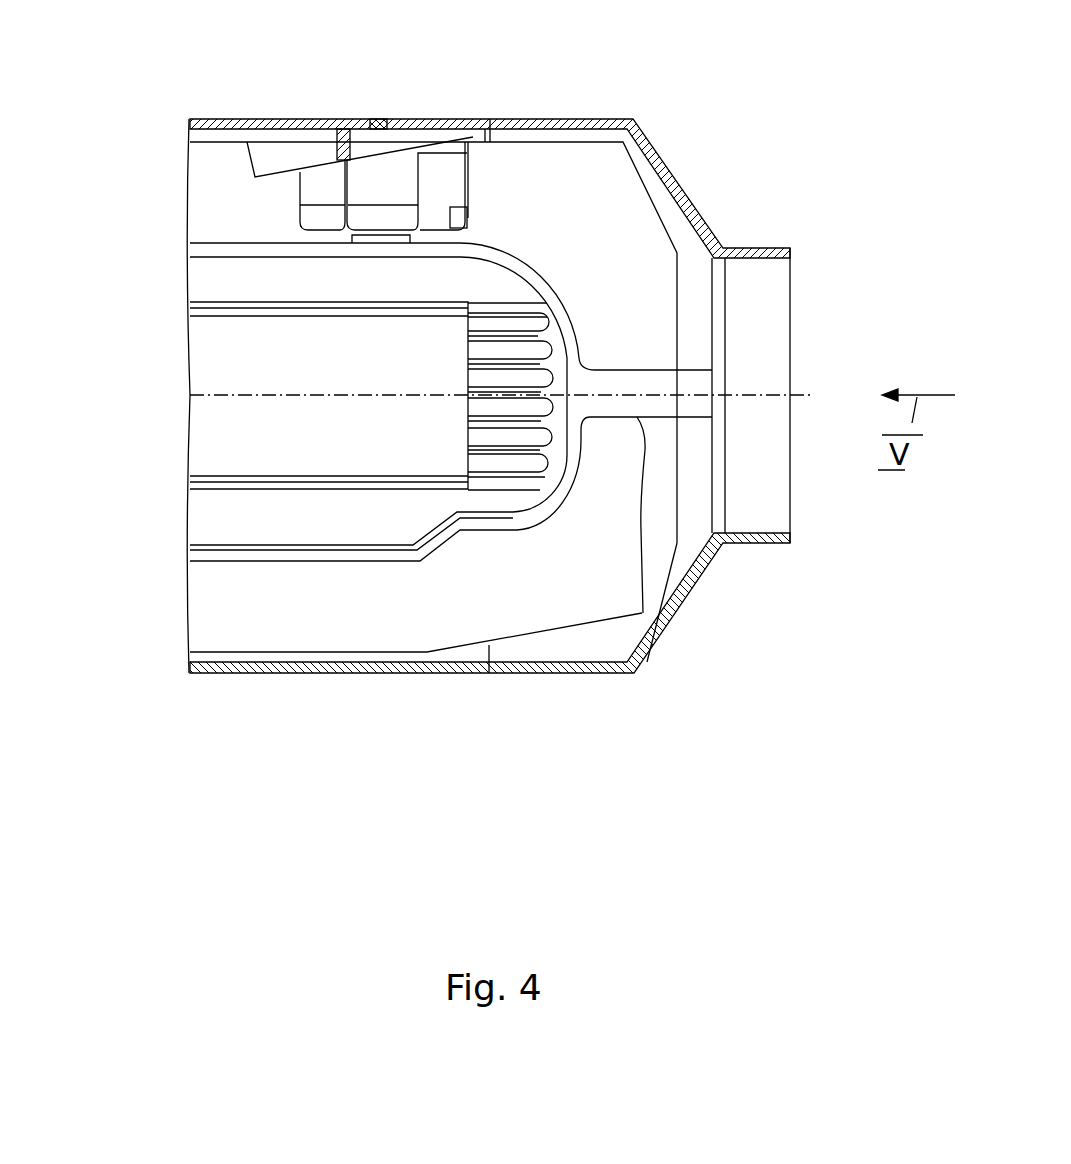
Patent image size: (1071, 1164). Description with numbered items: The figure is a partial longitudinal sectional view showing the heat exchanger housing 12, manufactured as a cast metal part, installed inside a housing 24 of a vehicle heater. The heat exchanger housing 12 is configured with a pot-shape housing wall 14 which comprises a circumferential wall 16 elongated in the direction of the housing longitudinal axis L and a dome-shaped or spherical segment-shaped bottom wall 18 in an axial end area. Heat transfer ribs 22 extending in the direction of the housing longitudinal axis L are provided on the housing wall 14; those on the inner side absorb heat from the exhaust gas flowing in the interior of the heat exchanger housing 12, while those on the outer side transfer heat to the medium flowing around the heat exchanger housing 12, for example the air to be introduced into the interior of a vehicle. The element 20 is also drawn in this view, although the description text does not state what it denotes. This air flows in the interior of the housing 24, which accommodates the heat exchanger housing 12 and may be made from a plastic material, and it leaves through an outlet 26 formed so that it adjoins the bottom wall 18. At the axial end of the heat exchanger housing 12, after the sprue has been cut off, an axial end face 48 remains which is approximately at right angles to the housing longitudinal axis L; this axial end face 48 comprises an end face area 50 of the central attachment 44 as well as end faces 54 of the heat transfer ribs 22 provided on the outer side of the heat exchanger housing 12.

The heat exchanger housing 12 is at (145, 242).
The housing wall 14 is at (234, 570).
The circumferential wall 16 is at (212, 245).
The bottom wall 18 is at (549, 312).
The filter element 20 is at (220, 277).
The heat transfer ribs 22 is at (617, 185).
The housing 24 is at (593, 675).
The outlet 26 is at (756, 256).
The central attachment 44 is at (643, 543).
The axial end face 48 is at (677, 337).
The end face area 50 is at (677, 385).
The end faces 54 is at (677, 502).
The housing longitudinal axis L is at (237, 397).